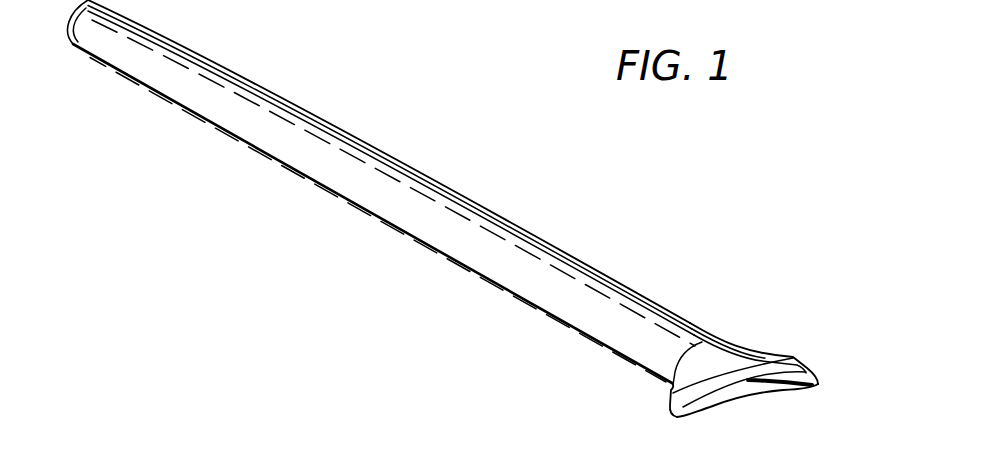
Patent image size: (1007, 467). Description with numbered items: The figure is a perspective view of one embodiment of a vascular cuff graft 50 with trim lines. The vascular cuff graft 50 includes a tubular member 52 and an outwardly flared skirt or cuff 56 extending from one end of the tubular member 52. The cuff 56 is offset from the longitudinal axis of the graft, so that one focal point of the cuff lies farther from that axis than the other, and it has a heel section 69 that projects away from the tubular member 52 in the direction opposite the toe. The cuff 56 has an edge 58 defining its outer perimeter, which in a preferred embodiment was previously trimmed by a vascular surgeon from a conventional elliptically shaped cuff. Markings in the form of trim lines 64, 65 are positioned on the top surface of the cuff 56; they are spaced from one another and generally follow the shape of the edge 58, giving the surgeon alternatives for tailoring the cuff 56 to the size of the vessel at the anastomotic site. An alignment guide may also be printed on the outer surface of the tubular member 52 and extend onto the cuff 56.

The vascular cuff graft 50 is at (598, 170).
The tubular member 52 is at (419, 240).
The cuff 56 is at (772, 354).
The edge 58 is at (784, 385).
The trim line 64 is at (700, 397).
The trim line 65 is at (721, 374).
The heel section 69 is at (670, 392).